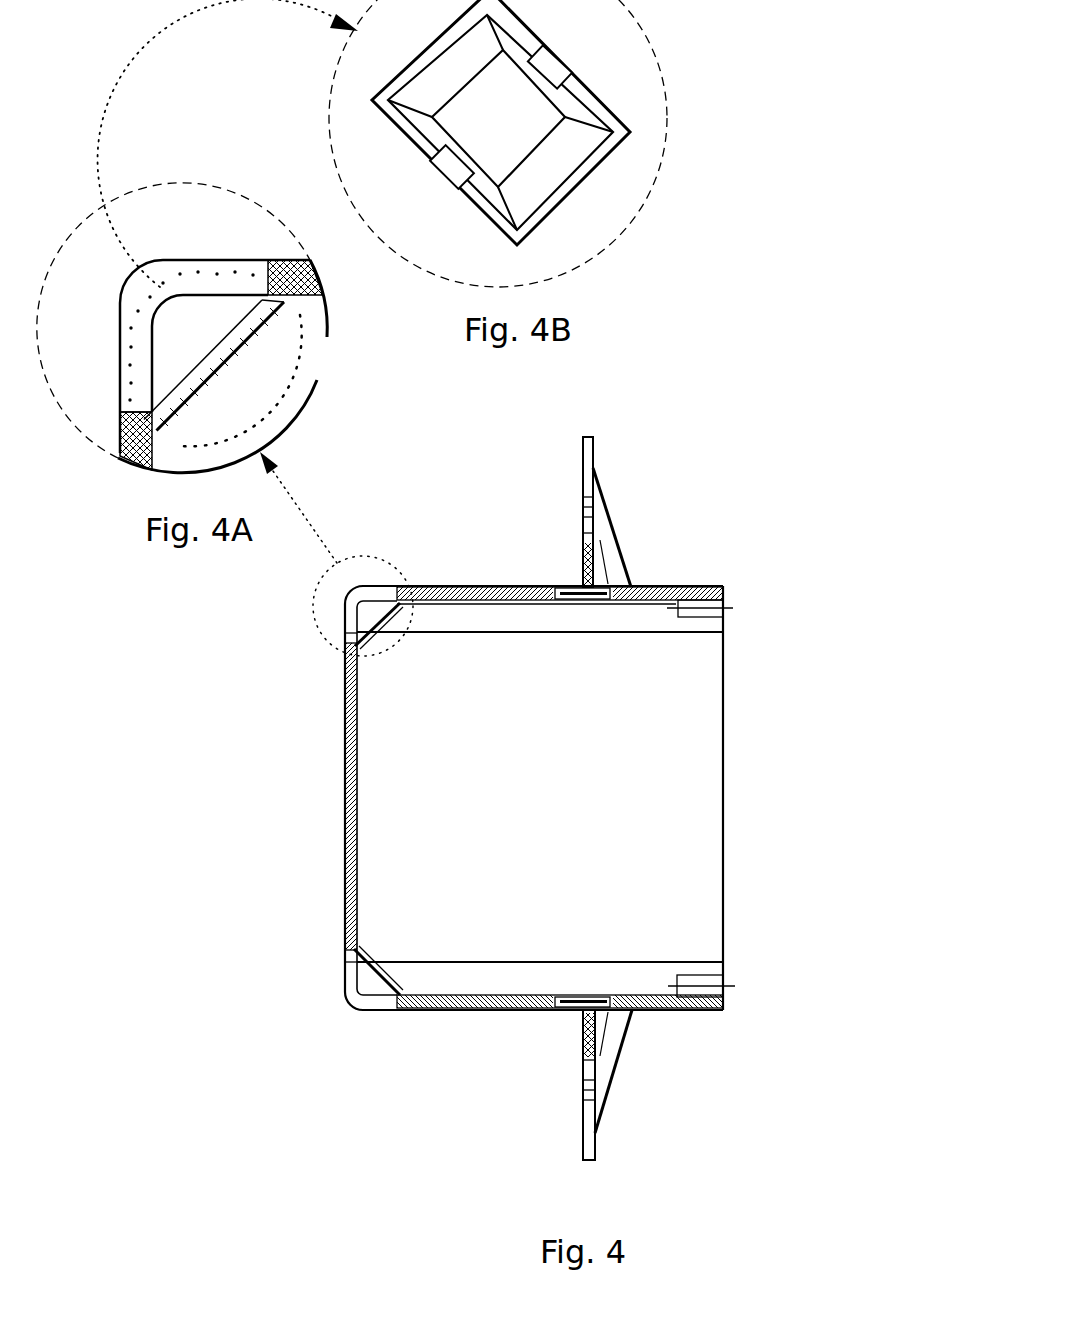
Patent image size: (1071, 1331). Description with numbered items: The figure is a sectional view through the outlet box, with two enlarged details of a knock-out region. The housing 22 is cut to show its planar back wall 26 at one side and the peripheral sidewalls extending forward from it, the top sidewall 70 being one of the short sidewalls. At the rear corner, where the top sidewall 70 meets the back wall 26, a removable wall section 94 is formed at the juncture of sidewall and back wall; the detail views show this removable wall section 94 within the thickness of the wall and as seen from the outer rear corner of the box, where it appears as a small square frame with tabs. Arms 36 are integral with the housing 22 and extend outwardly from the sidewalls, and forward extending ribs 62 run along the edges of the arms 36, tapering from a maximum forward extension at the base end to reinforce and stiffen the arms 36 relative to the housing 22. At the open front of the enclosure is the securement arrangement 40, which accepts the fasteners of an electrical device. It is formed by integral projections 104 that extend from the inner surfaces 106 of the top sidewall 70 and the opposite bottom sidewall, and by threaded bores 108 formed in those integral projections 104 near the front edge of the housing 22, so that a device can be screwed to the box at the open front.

In FIG. 4, the housing 22 is at (717, 464).
In FIG. 4, the planar back wall 26 is at (344, 730).
In FIG. 4A, the planar back wall 26 is at (120, 430).
In FIG. 4, the arms 36 is at (585, 455).
In FIG. 4, the securement arrangement 40 is at (751, 597).
In FIG. 4, the forward extending ribs 62 is at (603, 546).
In FIG. 4, the top sidewall 70 is at (500, 587).
In FIG. 4A, the top sidewall 70 is at (300, 261).
In FIG. 4, the removable wall sections 94 is at (393, 630).
In FIG. 4A, the removable wall sections 94 is at (220, 362).
In FIG. 4B, the removable wall sections 94 is at (489, 136).
In FIG. 4, the integral projections 104 is at (544, 620).
In FIG. 4, the inner surfaces 106 is at (494, 655).
In FIG. 4, the threaded bores 108 is at (733, 608).